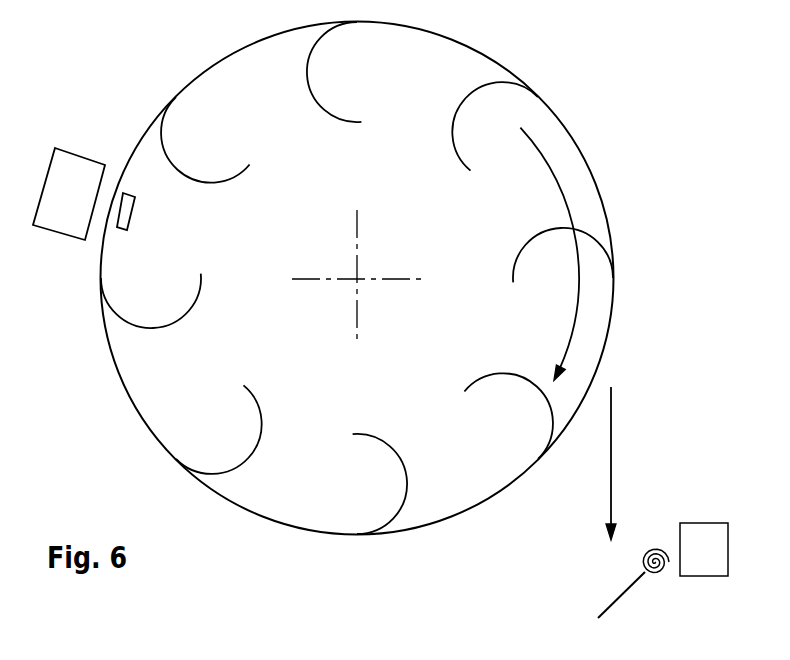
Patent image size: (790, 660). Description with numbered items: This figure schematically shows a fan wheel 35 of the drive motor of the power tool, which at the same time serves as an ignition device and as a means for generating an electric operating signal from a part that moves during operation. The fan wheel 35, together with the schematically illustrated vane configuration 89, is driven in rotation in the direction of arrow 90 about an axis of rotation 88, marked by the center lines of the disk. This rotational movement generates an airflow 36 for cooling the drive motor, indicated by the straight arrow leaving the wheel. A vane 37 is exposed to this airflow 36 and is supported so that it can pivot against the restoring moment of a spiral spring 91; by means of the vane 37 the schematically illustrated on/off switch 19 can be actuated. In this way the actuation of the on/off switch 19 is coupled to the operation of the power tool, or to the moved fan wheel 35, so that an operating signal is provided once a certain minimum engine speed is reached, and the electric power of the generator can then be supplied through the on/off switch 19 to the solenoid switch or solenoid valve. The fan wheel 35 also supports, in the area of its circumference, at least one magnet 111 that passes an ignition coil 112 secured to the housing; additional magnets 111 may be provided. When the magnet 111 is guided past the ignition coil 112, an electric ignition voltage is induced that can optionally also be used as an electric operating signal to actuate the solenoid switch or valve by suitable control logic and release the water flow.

The fan wheel 35 is at (118, 370).
The airflow 36 is at (611, 455).
The vane 37 is at (615, 598).
The axis of rotation 88 is at (357, 278).
The vane configuration 89 is at (265, 425).
The arrow 90 is at (580, 292).
The spiral spring 91 is at (663, 575).
The magnet 111 is at (130, 215).
The ignition coil 112 is at (70, 172).
The on/off switch 19 is at (691, 561).